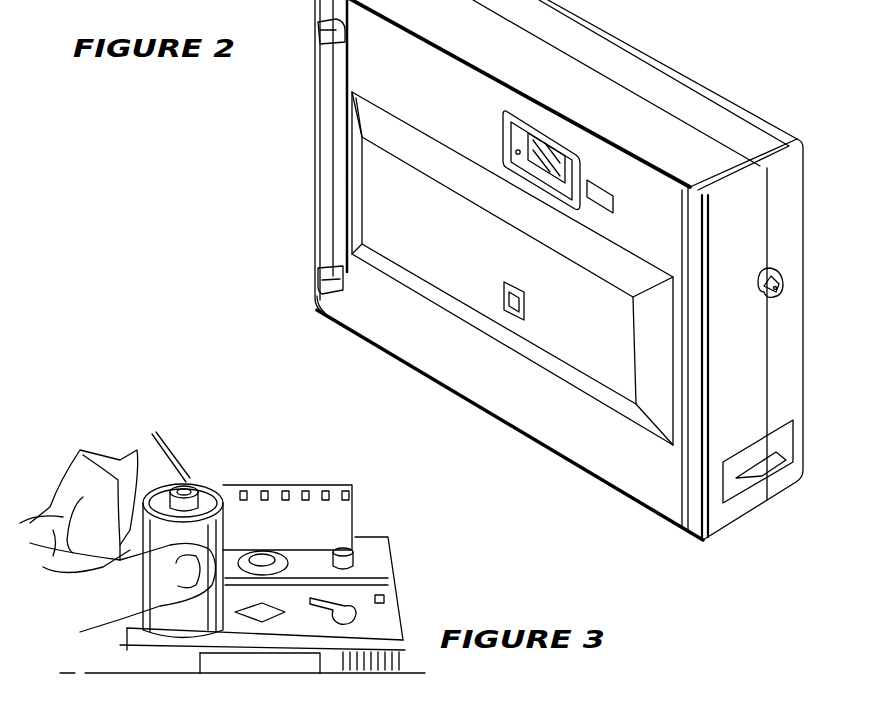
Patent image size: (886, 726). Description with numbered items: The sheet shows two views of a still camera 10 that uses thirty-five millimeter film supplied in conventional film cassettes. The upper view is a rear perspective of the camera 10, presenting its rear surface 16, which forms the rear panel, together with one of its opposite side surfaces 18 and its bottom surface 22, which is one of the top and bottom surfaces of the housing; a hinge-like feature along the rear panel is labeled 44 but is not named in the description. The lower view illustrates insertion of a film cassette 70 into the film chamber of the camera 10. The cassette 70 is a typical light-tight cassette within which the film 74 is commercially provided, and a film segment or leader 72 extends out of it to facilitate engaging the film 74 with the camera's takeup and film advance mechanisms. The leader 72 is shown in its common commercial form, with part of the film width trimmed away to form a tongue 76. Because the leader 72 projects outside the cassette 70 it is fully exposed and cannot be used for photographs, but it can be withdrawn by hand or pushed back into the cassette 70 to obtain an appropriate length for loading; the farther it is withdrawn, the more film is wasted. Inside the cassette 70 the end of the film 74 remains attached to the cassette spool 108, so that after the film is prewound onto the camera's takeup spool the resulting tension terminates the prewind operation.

In FIG. 2, the still camera 10 is at (560, 270).
In FIG. 2, the rear surface 16 is at (548, 150).
In FIG. 2, the side surface 18 is at (790, 223).
In FIG. 2, the bottom surface 22 is at (541, 440).
In FIG. 2, the hinge 44 is at (314, 60).
In FIG. 3, the film cassette 70 is at (138, 482).
In FIG. 3, the film leader 72 is at (228, 471).
In FIG. 3, the film 74 is at (335, 513).
In FIG. 3, the tongue 76 is at (345, 541).
In FIG. 3, the cassette spool 108 is at (203, 490).